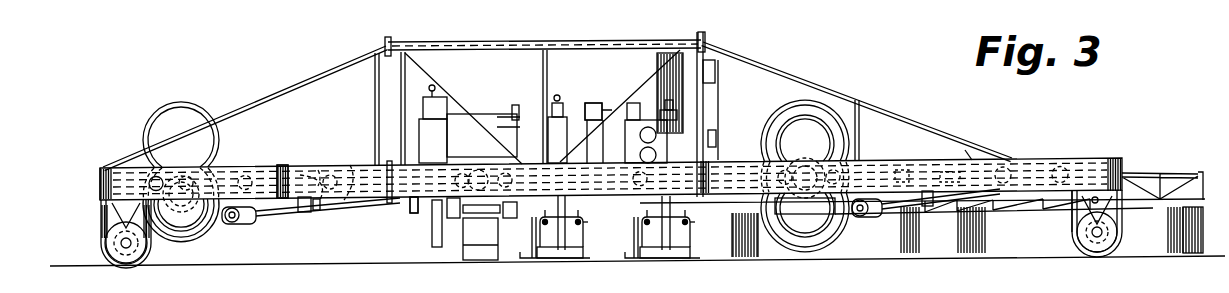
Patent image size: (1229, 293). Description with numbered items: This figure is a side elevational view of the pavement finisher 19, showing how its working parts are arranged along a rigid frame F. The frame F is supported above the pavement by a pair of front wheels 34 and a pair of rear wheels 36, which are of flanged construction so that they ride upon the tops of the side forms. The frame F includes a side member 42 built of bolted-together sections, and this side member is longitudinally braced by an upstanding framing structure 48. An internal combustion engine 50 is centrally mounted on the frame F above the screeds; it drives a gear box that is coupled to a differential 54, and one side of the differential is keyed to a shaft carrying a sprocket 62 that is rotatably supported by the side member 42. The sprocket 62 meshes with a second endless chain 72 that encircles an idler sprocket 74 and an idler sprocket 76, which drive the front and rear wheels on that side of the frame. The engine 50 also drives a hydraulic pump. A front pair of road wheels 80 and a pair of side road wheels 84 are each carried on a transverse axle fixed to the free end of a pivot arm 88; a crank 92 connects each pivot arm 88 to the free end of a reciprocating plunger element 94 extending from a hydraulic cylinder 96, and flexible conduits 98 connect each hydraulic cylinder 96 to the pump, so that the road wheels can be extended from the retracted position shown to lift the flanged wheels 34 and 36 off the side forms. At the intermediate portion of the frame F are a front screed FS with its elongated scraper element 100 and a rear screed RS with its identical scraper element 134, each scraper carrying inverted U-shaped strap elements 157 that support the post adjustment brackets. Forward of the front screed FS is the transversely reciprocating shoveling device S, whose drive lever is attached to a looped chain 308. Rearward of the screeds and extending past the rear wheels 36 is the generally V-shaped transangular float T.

The trench excavating machine 19 is at (752, 136).
The front wheels 34 is at (140, 267).
The rear wheels 36 is at (1107, 253).
The side member 42 is at (279, 165).
The upstanding framing structure 48 is at (447, 42).
The internal combustion engine 50 is at (592, 100).
The differential 54 is at (420, 200).
The sprocket 62 is at (487, 186).
The second endless chain 72 is at (308, 172).
The idler sprocket 74 is at (133, 186).
The idler sprocket 76 is at (1097, 230).
The front pair of road wheels 80 is at (217, 156).
The side road wheels 84 is at (831, 115).
The pivot arm 88 is at (205, 222).
The crank 92 is at (250, 220).
The reciprocating plunger element 94 is at (288, 212).
The hydraulic cylinder 96 is at (320, 210).
The flexible conduits 98 is at (356, 163).
The scraper element 100 is at (553, 260).
The scraper element 134 is at (666, 260).
The strap elements 157 is at (550, 221).
The looped chain 308 is at (434, 238).
The frame F is at (326, 166).
The front screed FS is at (590, 229).
The rear screed RS is at (695, 228).
The shoveling device S is at (480, 256).
The transangular float T is at (922, 235).